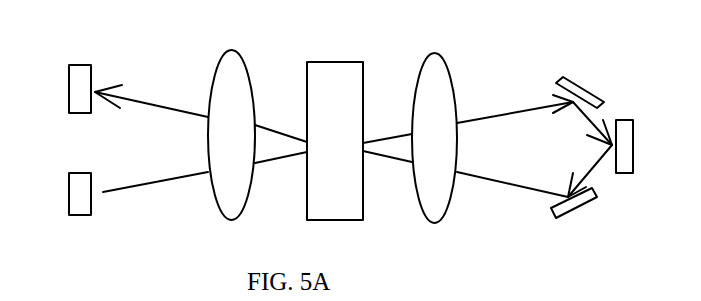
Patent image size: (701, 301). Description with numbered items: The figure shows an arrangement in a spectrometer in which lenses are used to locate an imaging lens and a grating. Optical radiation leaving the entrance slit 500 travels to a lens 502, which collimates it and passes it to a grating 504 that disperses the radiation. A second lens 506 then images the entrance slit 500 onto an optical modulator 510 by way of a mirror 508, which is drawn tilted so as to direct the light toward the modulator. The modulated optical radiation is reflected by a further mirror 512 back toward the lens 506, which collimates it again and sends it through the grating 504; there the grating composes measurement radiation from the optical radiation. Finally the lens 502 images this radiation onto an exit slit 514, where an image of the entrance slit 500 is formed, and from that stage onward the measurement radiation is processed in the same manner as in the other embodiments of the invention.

The entrance slit 500 is at (91, 205).
The lens 502 is at (232, 50).
The grating 504 is at (330, 62).
The lens 506 is at (435, 53).
The mirror 508 is at (572, 77).
The optical modulator 510 is at (633, 142).
The mirror 512 is at (580, 207).
The exit slit 514 is at (80, 65).